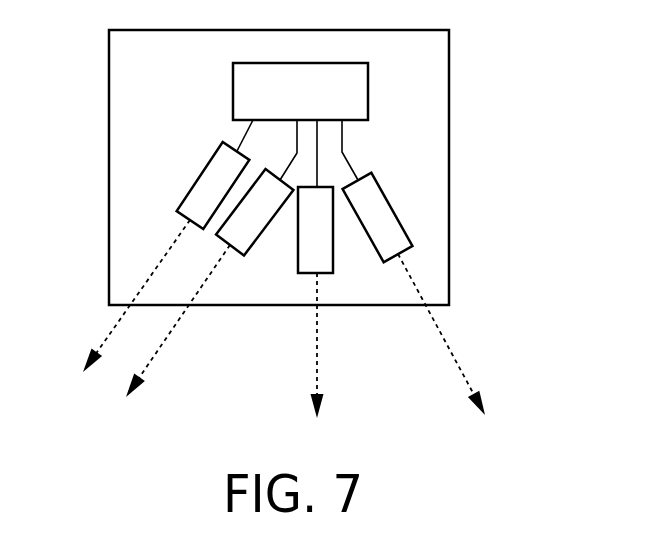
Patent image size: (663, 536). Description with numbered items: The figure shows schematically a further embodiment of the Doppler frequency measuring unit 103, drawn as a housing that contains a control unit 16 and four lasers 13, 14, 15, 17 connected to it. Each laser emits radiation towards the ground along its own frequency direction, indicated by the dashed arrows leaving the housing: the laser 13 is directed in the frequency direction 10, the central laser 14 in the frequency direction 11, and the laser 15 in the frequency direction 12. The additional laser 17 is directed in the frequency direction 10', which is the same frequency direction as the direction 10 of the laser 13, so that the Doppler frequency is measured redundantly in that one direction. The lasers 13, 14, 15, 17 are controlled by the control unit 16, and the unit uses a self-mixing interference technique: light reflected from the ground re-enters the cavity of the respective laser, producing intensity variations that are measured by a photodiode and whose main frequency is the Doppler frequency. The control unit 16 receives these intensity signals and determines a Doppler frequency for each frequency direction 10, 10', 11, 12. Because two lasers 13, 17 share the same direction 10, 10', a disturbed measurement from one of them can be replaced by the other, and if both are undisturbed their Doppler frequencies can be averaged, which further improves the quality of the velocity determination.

The Doppler frequency measuring unit 103 is at (449, 155).
The control unit 16 is at (368, 90).
The laser 17 is at (202, 173).
The laser 13 is at (237, 255).
The laser 14 is at (309, 272).
The laser 15 is at (397, 217).
The frequency direction 10' is at (111, 296).
The frequency direction 10 is at (178, 324).
The frequency direction 11 is at (317, 365).
The frequency direction 12 is at (457, 363).